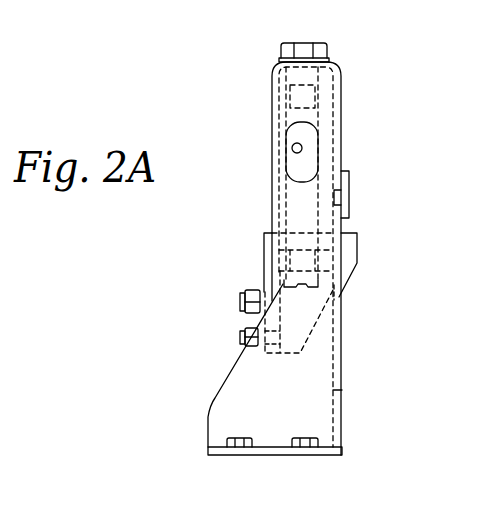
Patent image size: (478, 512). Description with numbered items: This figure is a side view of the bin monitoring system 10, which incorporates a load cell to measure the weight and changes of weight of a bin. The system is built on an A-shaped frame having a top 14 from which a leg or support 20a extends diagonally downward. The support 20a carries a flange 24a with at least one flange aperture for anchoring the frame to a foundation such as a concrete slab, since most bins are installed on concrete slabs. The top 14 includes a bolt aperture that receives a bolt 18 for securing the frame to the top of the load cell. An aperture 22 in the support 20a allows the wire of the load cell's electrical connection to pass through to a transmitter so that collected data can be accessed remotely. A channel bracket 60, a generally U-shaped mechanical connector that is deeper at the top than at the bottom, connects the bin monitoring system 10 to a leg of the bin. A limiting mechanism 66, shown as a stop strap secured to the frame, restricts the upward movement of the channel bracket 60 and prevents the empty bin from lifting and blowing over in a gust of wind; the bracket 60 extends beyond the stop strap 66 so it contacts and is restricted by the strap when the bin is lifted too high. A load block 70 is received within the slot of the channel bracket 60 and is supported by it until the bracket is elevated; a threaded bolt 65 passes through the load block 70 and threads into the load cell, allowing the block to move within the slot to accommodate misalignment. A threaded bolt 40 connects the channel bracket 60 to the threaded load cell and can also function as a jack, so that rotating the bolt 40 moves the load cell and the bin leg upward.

The bin monitoring system 10 is at (242, 81).
The top 14 is at (342, 64).
The bolt 18 is at (306, 44).
The aperture 22 is at (314, 151).
The limiting mechanism 66 is at (349, 190).
The channel bracket 60 is at (359, 249).
The load block 70 is at (342, 265).
The threaded bolt 40 is at (338, 286).
The threaded bolt 65 is at (240, 302).
The support 20a is at (230, 402).
The flange 24a is at (270, 456).